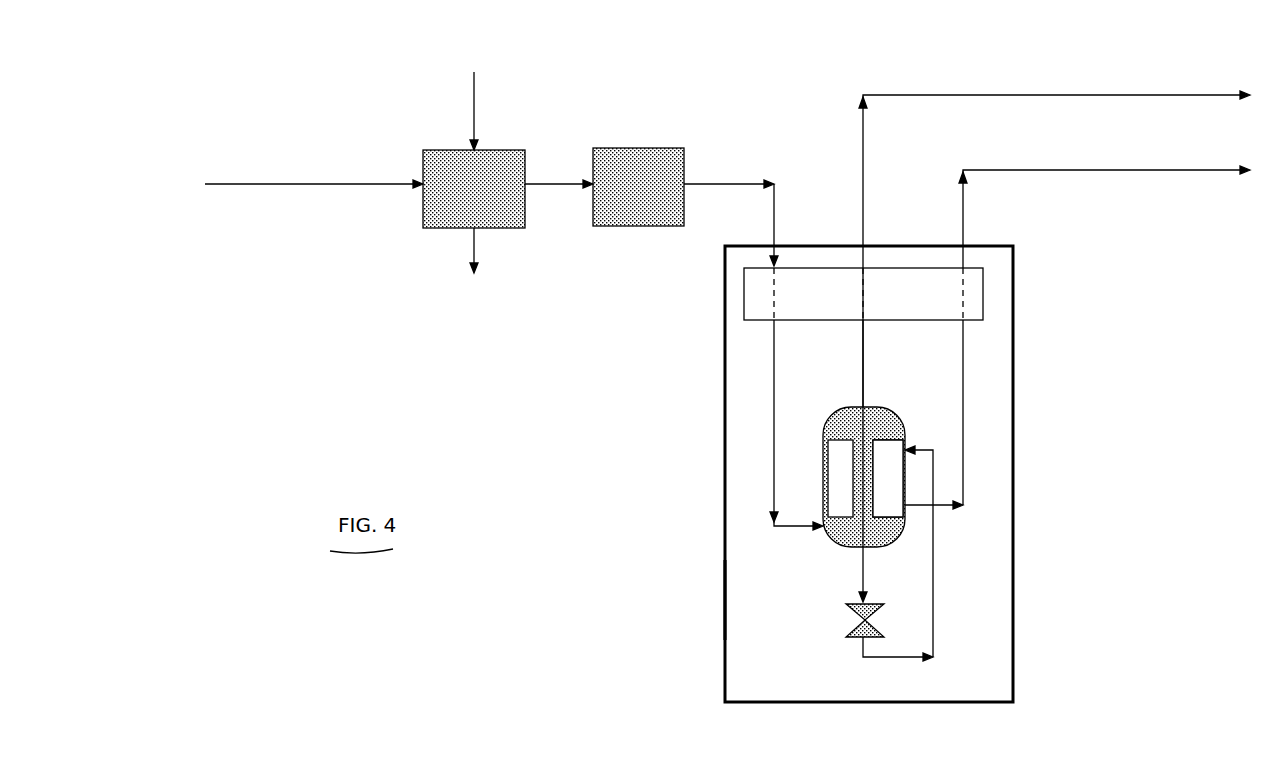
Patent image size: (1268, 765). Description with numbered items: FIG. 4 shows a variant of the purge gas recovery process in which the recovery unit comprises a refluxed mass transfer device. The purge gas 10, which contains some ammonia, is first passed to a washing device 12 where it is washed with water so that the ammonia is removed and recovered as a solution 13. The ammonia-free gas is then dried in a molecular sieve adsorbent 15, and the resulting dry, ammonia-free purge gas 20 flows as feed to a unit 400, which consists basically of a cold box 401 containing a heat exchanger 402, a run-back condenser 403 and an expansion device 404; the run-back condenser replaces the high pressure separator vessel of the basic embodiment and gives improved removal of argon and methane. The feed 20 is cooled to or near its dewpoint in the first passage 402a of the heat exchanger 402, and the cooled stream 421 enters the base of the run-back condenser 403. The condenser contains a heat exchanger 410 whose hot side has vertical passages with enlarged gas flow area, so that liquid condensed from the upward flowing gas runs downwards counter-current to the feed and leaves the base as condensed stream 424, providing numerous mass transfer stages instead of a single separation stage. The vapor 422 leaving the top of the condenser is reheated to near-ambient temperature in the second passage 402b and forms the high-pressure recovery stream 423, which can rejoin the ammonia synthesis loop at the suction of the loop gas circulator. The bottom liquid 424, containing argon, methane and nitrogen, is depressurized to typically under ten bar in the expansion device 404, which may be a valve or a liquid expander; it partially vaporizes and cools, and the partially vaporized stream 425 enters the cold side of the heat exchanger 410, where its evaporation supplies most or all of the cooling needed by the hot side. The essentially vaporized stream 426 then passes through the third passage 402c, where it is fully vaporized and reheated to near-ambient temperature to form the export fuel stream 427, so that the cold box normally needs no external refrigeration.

The purge gas 10 is at (290, 176).
The washing device 12 is at (508, 150).
The solution 13 is at (478, 252).
The molecular sieve adsorbent 15 is at (636, 150).
The dry, ammonia-free purge gas 20 is at (736, 182).
The unit 400 is at (1020, 414).
The cold box 401 is at (725, 593).
The heat exchanger 402 is at (745, 303).
The first passage 402a is at (776, 292).
The second passage 402b is at (865, 292).
The third passage 402c is at (962, 295).
The run-back condenser 403 is at (848, 546).
The expansion device 404 is at (858, 636).
The heat exchanger 410 is at (887, 448).
The cooled stream 421 is at (774, 390).
The vapor 422 is at (863, 342).
The high-pressure recovery stream 423 is at (1003, 93).
The condensed stream 424 is at (866, 570).
The partially vaporized stream 425 is at (936, 600).
The essentially vaporized stream 426 is at (963, 395).
The export fuel stream 427 is at (1113, 168).